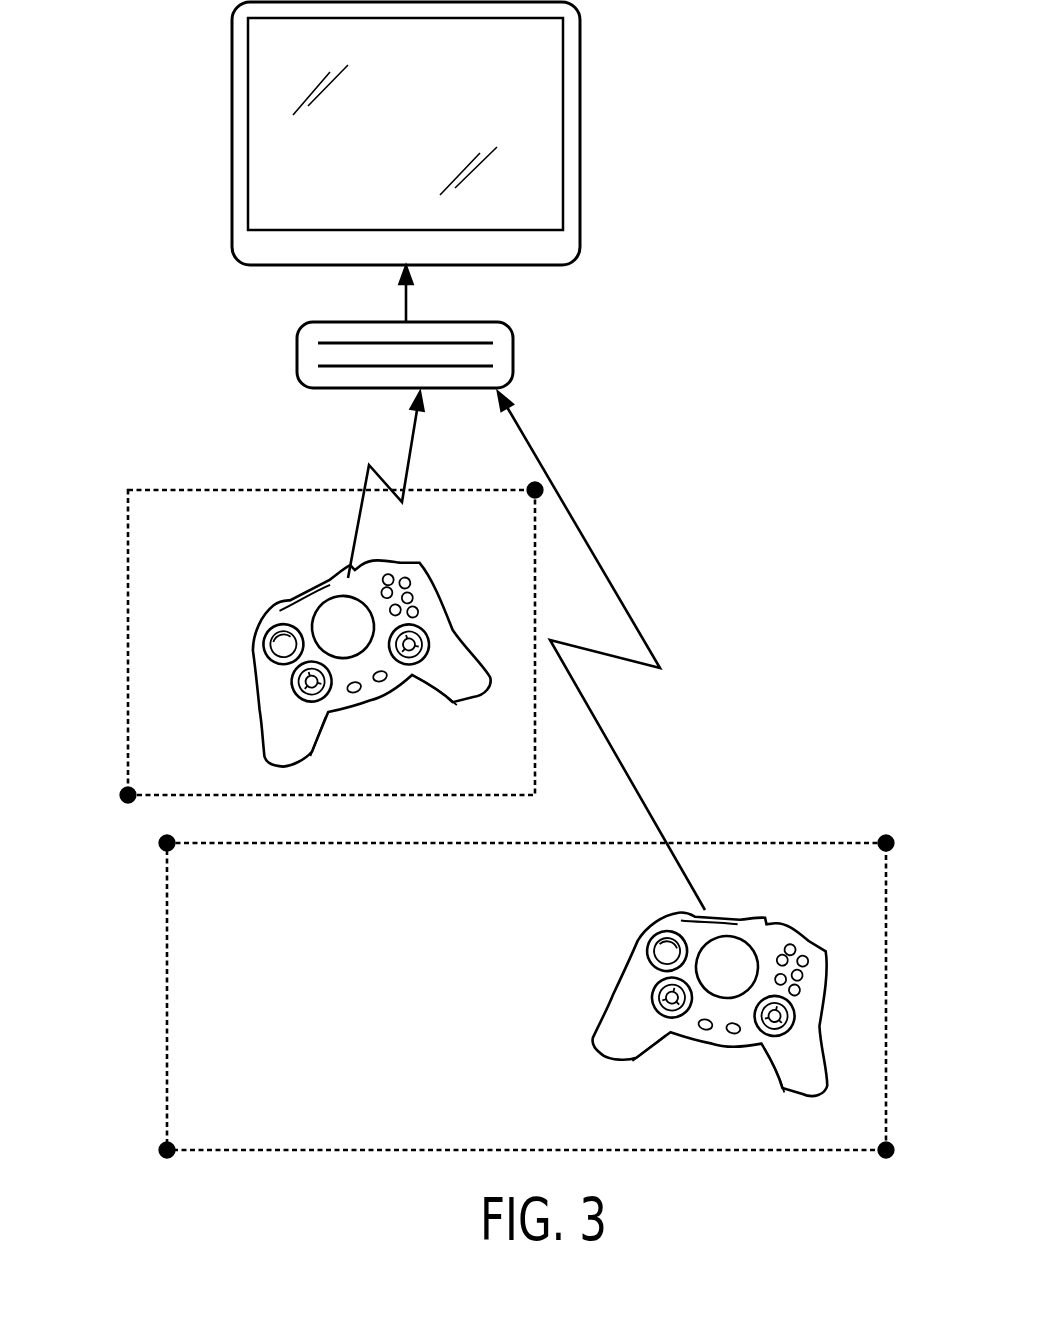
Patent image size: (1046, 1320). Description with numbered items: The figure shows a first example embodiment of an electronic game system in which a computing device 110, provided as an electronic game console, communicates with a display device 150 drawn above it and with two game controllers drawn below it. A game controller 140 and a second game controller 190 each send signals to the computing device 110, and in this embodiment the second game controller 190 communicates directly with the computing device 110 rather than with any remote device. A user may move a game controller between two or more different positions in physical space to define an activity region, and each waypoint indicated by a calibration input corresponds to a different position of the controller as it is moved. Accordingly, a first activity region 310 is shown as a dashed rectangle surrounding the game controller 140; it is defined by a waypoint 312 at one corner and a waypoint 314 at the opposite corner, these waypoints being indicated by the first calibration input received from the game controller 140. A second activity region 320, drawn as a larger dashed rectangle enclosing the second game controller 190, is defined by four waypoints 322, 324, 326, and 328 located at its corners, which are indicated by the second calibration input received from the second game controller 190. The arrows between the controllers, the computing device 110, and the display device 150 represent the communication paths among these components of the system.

The display device 150 is at (580, 160).
The computing device 110 is at (513, 357).
The game controller 140 is at (440, 597).
The second game controller 190 is at (598, 1040).
The first activity region 310 is at (535, 770).
The waypoint 312 is at (121, 800).
The waypoint 314 is at (543, 494).
The second activity region 320 is at (886, 995).
The waypoint 322 is at (162, 846).
The waypoint 324 is at (162, 1154).
The waypoint 326 is at (885, 1155).
The waypoint 328 is at (888, 838).